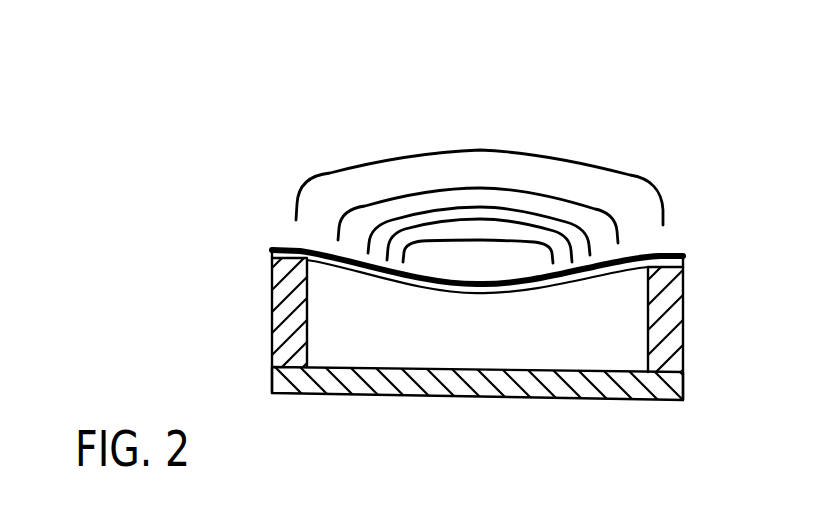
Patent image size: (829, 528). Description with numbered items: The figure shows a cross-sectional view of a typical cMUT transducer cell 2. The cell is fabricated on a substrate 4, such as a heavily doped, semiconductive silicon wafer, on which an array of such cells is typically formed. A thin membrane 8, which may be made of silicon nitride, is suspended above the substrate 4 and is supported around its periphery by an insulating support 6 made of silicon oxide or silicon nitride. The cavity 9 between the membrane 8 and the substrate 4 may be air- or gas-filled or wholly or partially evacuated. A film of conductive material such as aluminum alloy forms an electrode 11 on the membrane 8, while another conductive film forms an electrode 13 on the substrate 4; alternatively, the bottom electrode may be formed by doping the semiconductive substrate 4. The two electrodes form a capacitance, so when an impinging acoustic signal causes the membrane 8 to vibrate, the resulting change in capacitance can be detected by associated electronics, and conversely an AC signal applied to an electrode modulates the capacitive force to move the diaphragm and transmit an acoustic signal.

The cMUT transducer cell 2 is at (263, 159).
The substrate 4 is at (393, 386).
The insulating support 6 is at (272, 308).
The membrane 8 is at (418, 284).
The cavity 9 is at (342, 346).
The electrode 11 is at (522, 276).
The electrode 13 is at (607, 387).